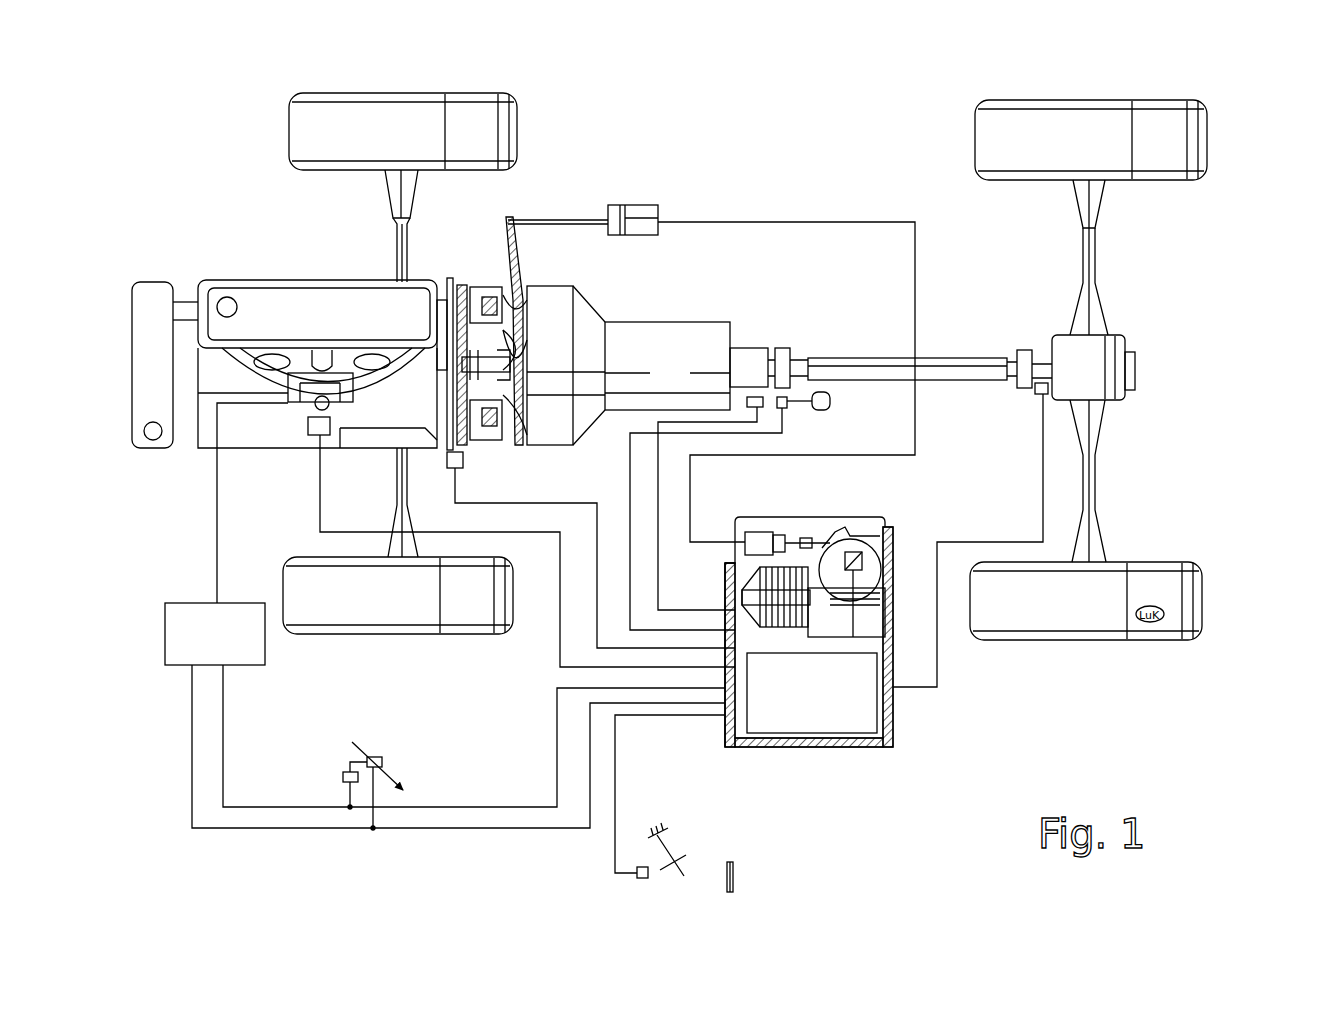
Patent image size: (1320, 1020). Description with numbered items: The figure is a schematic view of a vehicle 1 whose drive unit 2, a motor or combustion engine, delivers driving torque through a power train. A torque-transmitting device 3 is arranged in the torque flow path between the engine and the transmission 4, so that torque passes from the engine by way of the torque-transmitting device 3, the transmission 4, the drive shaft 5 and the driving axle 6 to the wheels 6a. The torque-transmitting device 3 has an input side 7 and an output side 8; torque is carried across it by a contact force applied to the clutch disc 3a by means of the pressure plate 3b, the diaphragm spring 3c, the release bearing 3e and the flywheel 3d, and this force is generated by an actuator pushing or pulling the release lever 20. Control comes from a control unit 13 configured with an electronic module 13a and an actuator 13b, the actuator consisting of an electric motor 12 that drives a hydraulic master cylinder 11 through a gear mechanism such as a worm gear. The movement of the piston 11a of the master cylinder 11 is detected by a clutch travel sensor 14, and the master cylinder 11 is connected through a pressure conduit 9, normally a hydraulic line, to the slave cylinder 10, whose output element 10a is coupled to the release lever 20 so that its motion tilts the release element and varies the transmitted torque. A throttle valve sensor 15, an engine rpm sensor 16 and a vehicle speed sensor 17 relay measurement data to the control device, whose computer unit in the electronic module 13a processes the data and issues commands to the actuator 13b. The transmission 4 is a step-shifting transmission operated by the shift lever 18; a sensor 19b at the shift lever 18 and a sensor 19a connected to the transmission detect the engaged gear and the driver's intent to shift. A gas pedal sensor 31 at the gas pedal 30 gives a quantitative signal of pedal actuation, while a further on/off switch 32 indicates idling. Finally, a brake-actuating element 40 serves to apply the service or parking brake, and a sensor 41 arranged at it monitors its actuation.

The vehicle 1 is at (782, 112).
The drive unit 2 is at (262, 305).
The torque-transmitting device 3 is at (528, 363).
The clutch disc 3a is at (497, 425).
The pressure plate 3b is at (493, 300).
The diaphragm spring 3c is at (505, 335).
The flywheel 3d is at (470, 422).
The release bearing 3e is at (560, 400).
The transmission 4 is at (684, 378).
The drive shaft 5 is at (960, 366).
The driving axle 6 is at (1092, 485).
The wheels 6a is at (1180, 148).
The input side 7 is at (445, 292).
The output side 8 is at (540, 300).
The pressure conduit 9 is at (725, 222).
The slave cylinder 10 is at (635, 210).
The output element of the slave cylinder 10a is at (565, 220).
The hydraulic master cylinder 11 is at (758, 540).
The piston of the master cylinder 11a is at (780, 535).
The electric motor 12 is at (758, 585).
The control unit 13 is at (728, 728).
The electronic module 13a is at (828, 705).
The actuator 13b is at (868, 518).
The clutch travel sensor 14 is at (862, 560).
The throttle valve sensor 15 is at (312, 428).
The engine rpm sensor 16 is at (452, 468).
The vehicle speed sensor 17 is at (1040, 396).
The shift lever 18 is at (786, 350).
The sensor 19a is at (757, 397).
The sensor 19b is at (792, 406).
The release lever 20 is at (512, 240).
The gas pedal 30 is at (360, 750).
The gas pedal sensor 31 is at (343, 775).
The on/off switch 32 is at (382, 760).
The brake-actuating element 40 is at (232, 648).
The sensor 41 is at (637, 875).